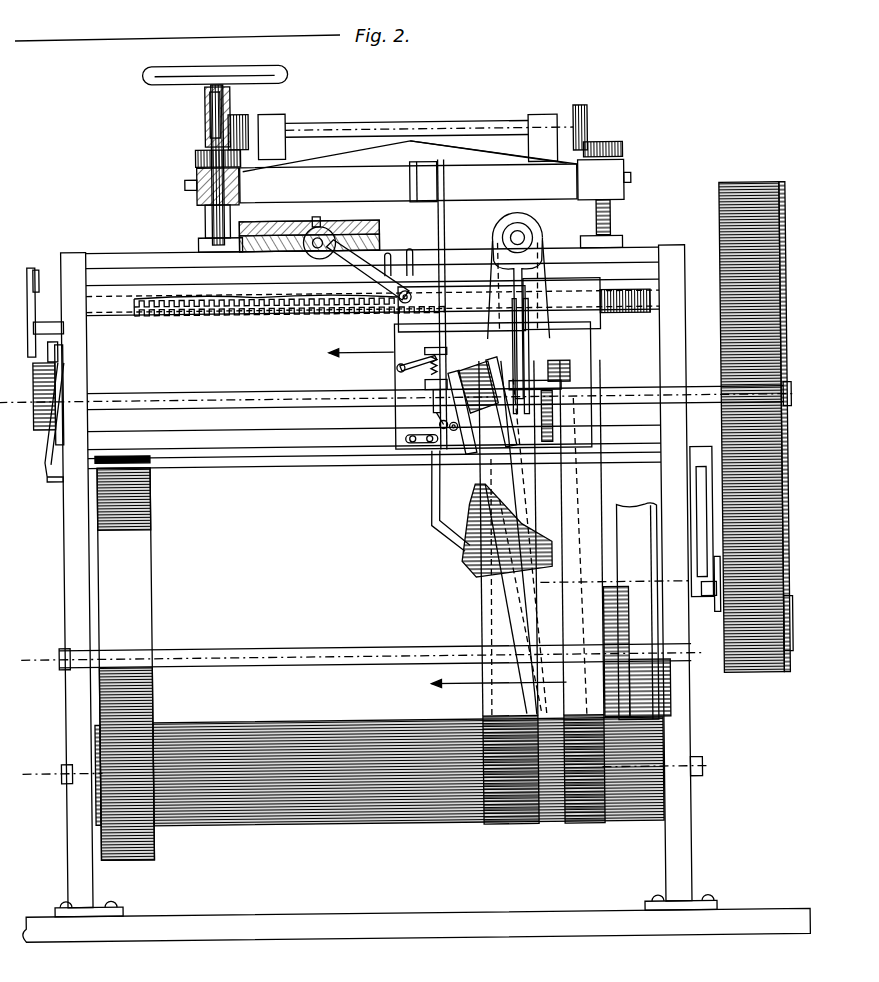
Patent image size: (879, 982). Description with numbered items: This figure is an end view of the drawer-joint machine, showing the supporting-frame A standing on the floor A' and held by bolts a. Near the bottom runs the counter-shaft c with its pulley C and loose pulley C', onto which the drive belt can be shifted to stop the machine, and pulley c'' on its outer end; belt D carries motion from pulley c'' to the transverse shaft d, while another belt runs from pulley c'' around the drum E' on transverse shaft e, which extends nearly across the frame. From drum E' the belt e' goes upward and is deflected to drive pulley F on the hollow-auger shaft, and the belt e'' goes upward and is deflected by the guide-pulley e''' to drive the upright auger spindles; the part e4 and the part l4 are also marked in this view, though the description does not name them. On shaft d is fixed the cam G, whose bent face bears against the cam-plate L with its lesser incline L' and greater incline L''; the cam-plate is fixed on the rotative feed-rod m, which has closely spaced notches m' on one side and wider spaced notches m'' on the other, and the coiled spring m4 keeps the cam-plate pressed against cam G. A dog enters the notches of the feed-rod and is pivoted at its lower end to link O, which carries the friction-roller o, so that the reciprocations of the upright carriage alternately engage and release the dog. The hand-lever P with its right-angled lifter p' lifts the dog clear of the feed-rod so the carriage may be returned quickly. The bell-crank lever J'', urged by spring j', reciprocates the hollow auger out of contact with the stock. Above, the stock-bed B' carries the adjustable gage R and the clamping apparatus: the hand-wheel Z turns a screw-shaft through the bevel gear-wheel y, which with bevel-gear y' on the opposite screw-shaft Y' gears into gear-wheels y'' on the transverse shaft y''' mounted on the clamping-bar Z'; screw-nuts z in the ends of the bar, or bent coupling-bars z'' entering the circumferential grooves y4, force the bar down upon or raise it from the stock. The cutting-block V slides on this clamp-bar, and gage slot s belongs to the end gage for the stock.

The supporting-frame A is at (365, 563).
The floor A' is at (417, 939).
The bolts a is at (118, 906).
The transverse shaft d is at (199, 395).
The counter-shaft c is at (361, 666).
The transverse shaft e is at (369, 769).
The gear wheel C''' is at (123, 664).
The drum E' is at (408, 783).
The belt e' is at (513, 601).
The belt e'' is at (615, 601).
The friction-roller o is at (507, 598).
The loose pulley C' is at (627, 611).
The pulley C is at (650, 687).
The belt D is at (790, 518).
The pulley c'' is at (802, 622).
The notches m' is at (265, 290).
The notches m'' is at (289, 321).
The feed-rod m is at (138, 319).
The bell-crank lever J'' is at (562, 304).
The coiled spring m4 is at (625, 309).
The stock-bed B' is at (462, 292).
The link O is at (492, 385).
The pawl N' is at (437, 352).
The right-angled lifter p' is at (430, 377).
The hand-lever P is at (322, 386).
The guide bars e4 is at (482, 400).
The guide-pulley e''' is at (553, 387).
The spring j' is at (526, 355).
The cutting-block V is at (408, 171).
The clamping-bar Z' is at (342, 186).
The bar w is at (383, 226).
The adjustable gage R is at (318, 216).
The longitudinal slot s is at (310, 256).
The pulley F is at (505, 228).
The hand-wheel Z is at (215, 97).
The gear-wheels y'' is at (416, 120).
The transverse rotative shaft y''' is at (429, 114).
The bevel gear-wheel y is at (199, 152).
The bent coupling-bars z'' is at (404, 163).
The screw-nut z is at (181, 196).
The upright screw-shaft Y' is at (405, 217).
The base block X is at (200, 250).
The bevel-gear y' is at (613, 141).
The circumferential groove y4 is at (602, 162).
The incline L' is at (22, 302).
The cam-plate L is at (33, 315).
The pin l4 is at (50, 345).
The incline L'' is at (34, 395).
The cam G is at (44, 452).